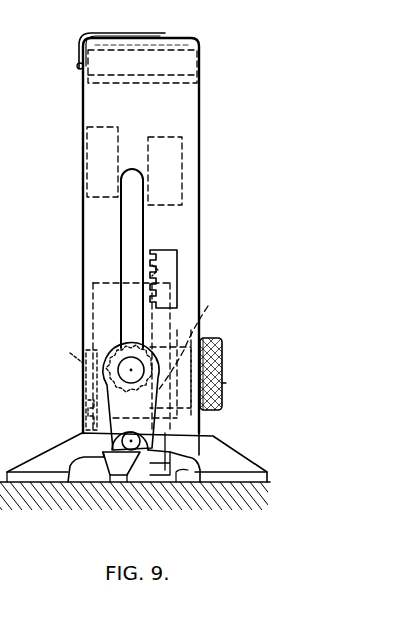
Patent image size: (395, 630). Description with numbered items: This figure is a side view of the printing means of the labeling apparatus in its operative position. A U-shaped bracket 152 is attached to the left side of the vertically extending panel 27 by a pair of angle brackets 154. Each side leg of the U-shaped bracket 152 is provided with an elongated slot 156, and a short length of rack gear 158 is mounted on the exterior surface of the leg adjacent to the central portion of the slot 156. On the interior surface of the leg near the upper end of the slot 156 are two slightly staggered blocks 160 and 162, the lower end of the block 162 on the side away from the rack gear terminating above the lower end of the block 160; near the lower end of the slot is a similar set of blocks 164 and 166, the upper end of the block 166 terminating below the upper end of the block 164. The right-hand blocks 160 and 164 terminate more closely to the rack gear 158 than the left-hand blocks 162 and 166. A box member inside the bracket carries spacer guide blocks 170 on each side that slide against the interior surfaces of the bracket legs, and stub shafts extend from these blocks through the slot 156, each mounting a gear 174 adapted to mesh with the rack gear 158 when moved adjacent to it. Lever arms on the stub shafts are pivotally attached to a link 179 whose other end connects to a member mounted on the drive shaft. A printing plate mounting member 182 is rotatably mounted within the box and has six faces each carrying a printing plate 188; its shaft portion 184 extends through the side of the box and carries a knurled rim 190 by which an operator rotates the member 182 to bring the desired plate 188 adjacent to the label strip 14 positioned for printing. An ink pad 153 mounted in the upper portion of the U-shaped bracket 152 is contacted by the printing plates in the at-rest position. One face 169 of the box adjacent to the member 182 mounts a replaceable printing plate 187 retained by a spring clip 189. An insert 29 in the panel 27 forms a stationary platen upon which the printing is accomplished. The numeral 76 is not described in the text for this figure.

The label strip 14 is at (110, 490).
The vertically extending panel 27 is at (47, 527).
The insert 29 is at (175, 494).
The side element 76 is at (41, 372).
The U-shaped bracket 152 is at (167, 36).
The ink pad 153 is at (124, 58).
The angle brackets 154 is at (228, 447).
The elongated slot 156 is at (120, 236).
The rack gear 158 is at (172, 272).
The block 160 is at (182, 137).
The block 162 is at (95, 127).
The block 164 is at (208, 335).
The block 166 is at (84, 366).
The face 169 is at (140, 470).
The spacer guide blocks 170 is at (128, 318).
The gear 174 is at (221, 358).
The link 179 is at (141, 506).
The printing plate mounting member 182 is at (175, 490).
The shaft portion 184 is at (208, 306).
The replaceable printing plate 187 is at (103, 468).
The printing plate 188 is at (150, 272).
The spring clip 189 is at (97, 467).
The knurled rim 190 is at (222, 384).